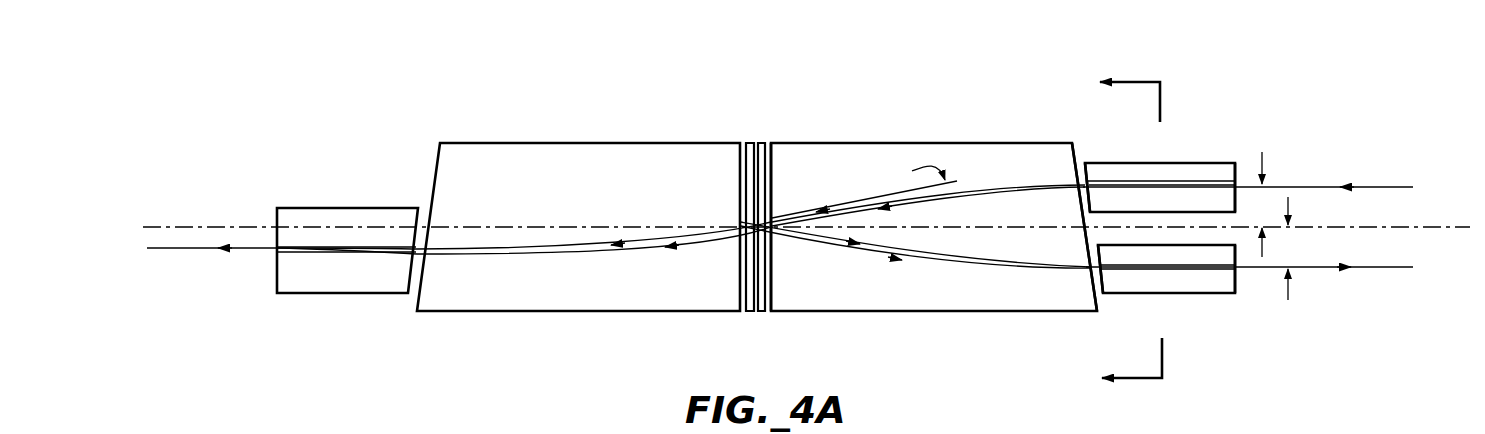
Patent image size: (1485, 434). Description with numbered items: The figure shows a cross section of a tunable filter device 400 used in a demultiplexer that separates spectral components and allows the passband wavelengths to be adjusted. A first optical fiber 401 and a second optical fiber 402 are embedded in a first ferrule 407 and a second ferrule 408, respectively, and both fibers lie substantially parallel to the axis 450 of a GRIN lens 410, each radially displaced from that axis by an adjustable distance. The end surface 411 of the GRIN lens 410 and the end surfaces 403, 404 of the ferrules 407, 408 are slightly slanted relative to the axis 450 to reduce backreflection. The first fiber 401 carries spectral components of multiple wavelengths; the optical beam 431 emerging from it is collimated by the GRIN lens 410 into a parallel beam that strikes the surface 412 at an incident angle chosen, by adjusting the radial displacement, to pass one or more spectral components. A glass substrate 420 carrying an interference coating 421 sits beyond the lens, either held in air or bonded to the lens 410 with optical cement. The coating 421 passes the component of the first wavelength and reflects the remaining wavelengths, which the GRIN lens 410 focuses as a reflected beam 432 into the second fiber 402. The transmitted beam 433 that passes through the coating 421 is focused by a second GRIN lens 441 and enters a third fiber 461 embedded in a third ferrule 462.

The optical multiplexer/demultiplexer device 400 is at (927, 78).
The first optical fiber 401 is at (1136, 183).
The second optical fiber 402 is at (1165, 276).
The end surface of first ferrule 403 is at (1093, 176).
The end surface of second ferrule 404 is at (1108, 278).
The first ferrule 407 is at (1227, 157).
The second ferrule 408 is at (1228, 293).
The GRIN lens 410 is at (962, 140).
The end surface of GRIN lens 411 is at (1078, 147).
The surface of GRIN lens 412 is at (773, 155).
The glass substrate 420 is at (744, 318).
The interference coating 421 is at (766, 318).
The optical beam 431 is at (988, 183).
The reflected light beam 432 is at (972, 272).
The transmitted beam 433 is at (598, 262).
The second GRIN lens 441 is at (610, 141).
The axis 450 is at (1390, 222).
The third fiber 461 is at (377, 259).
The third ferrule 462 is at (315, 206).